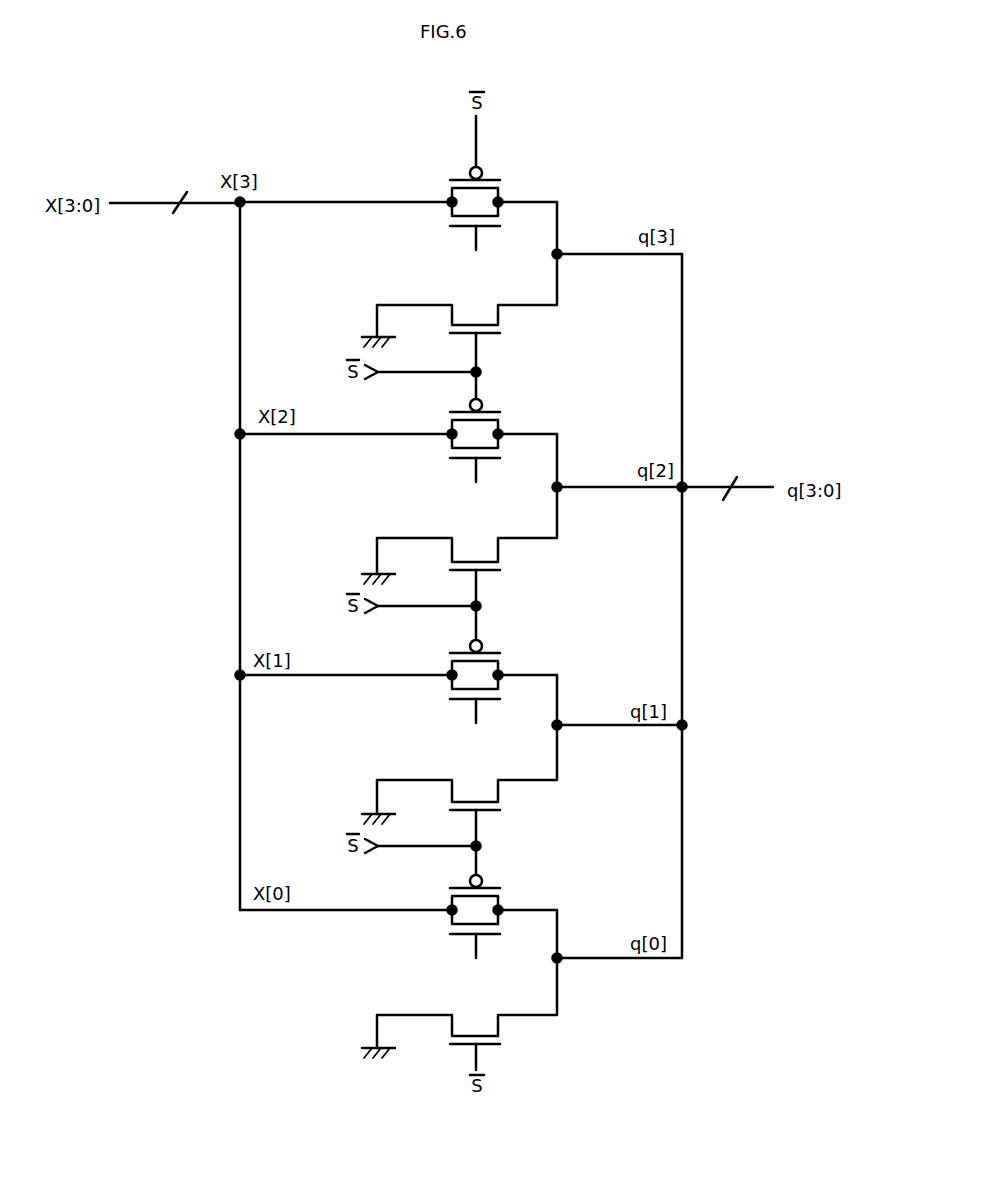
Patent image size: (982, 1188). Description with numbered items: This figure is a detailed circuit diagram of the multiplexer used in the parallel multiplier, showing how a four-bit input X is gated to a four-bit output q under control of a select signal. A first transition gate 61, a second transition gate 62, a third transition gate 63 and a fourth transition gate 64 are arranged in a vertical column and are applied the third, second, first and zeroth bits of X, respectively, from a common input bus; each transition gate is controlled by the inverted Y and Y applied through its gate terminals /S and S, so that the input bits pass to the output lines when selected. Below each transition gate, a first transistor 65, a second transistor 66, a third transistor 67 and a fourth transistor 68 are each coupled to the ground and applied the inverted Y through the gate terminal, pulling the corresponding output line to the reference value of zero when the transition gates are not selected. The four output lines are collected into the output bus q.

The first transition gate 61 is at (497, 178).
The second transition gate 62 is at (498, 425).
The third transition gate 63 is at (498, 667).
The fourth transition gate 64 is at (498, 903).
The first transistor 65 is at (498, 318).
The second transistor 66 is at (498, 548).
The third transistor 67 is at (498, 790).
The fourth transistor 68 is at (498, 1025).